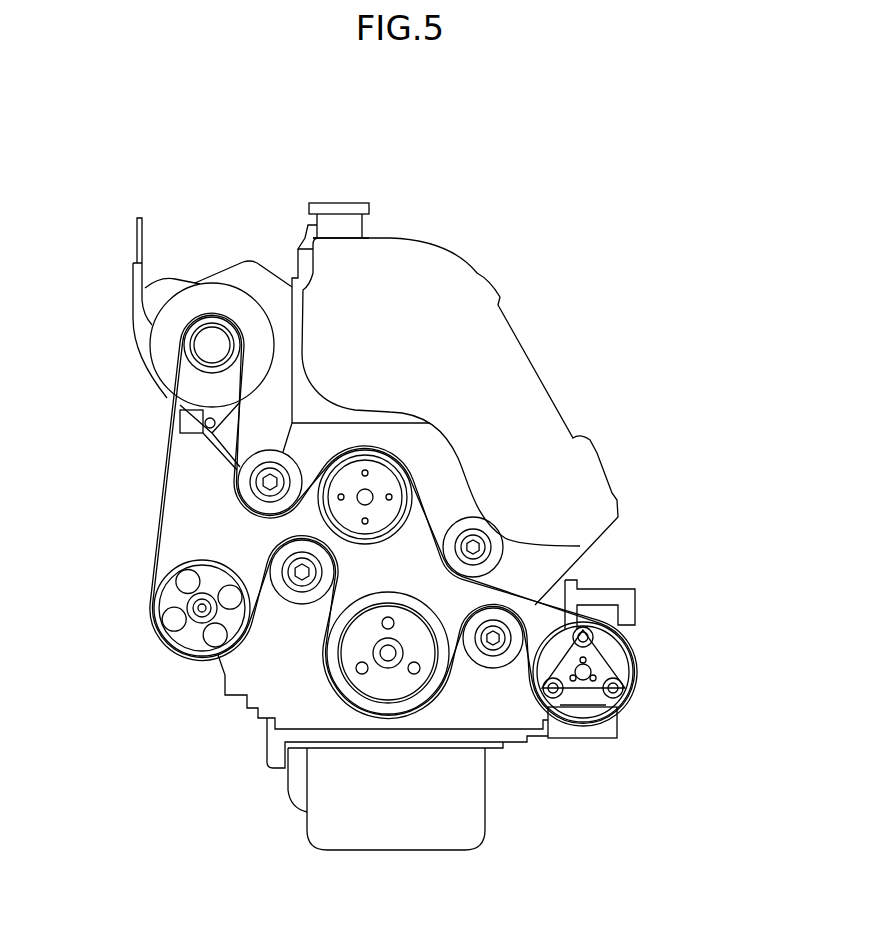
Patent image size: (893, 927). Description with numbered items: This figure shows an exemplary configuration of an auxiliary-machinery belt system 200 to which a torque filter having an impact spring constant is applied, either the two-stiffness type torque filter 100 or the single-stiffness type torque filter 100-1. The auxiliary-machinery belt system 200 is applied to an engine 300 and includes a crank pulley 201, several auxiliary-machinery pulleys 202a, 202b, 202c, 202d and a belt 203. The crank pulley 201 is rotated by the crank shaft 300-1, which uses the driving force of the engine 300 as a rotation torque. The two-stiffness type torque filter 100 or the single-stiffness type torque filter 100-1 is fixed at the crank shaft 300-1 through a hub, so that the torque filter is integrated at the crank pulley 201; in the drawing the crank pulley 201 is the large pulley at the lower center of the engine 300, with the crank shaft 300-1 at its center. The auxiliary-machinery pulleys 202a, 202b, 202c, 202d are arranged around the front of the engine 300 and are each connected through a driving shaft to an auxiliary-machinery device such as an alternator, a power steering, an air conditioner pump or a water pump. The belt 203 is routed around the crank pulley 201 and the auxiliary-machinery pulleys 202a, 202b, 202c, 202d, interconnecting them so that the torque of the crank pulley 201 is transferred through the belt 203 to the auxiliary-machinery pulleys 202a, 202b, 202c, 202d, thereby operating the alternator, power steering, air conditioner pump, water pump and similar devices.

The 2_stiff type torque filter 100 is at (382, 678).
The 1_stiff type torque filter 100-1 is at (382, 678).
The auxiliary-machinery belt system 200 is at (640, 497).
The crank pulley 201 is at (433, 698).
The auxiliary-machinery pulley 202a is at (185, 362).
The auxiliary-machinery pulley 202b is at (163, 640).
The auxiliary-machinery pulley 202c is at (405, 493).
The auxiliary-machinery pulley 202d is at (633, 685).
The belt 203 is at (165, 478).
The engine 300 is at (412, 287).
The crank shaft 300-1 is at (372, 652).